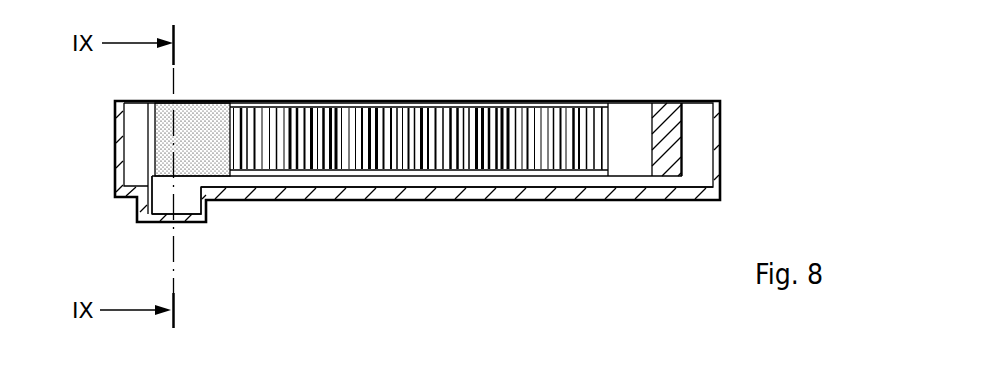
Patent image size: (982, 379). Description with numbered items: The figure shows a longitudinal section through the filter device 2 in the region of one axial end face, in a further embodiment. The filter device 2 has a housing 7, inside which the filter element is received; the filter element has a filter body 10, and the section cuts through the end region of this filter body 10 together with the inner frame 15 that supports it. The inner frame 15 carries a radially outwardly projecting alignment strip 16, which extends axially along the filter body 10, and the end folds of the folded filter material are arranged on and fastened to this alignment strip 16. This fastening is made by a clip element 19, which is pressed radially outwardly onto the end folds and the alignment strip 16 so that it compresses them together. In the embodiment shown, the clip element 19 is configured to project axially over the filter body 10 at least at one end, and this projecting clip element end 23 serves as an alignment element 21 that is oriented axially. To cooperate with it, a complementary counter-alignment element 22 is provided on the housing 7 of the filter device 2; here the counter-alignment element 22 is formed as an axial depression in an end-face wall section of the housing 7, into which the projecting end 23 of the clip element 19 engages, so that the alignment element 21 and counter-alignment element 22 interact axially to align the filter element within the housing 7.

The filter device 2 is at (752, 122).
The housing 7 is at (460, 210).
The filter body 10 is at (665, 118).
The inner frame 15 is at (388, 92).
The alignment strip 16 is at (197, 113).
The clip element 19 is at (135, 134).
The alignment element 21 is at (147, 200).
The projecting clip element end 23 is at (99, 211).
The counter-alignment element 22 is at (207, 207).